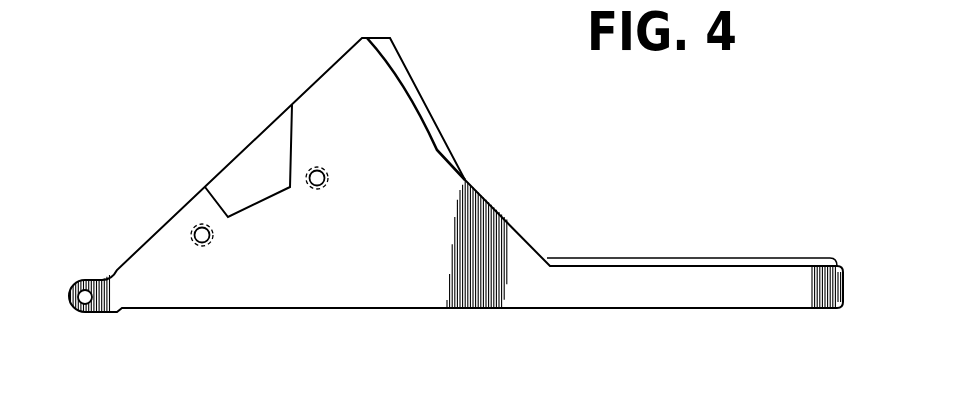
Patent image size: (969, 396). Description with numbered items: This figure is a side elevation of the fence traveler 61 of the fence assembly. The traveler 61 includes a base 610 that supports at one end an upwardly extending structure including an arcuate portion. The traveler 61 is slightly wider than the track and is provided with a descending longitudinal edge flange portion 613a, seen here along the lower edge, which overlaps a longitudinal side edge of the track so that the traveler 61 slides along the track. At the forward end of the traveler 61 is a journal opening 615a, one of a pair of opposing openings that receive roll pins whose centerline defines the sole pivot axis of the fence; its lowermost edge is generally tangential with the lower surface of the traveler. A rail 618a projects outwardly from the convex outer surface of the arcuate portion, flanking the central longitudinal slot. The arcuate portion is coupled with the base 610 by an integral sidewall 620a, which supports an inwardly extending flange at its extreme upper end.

The fence traveler 61 is at (478, 188).
The base 610 is at (828, 277).
The longitudinal edge flange portion 613a is at (552, 302).
The journal opening 615a is at (78, 308).
The rail 618a is at (402, 73).
The sidewall 620a is at (390, 250).